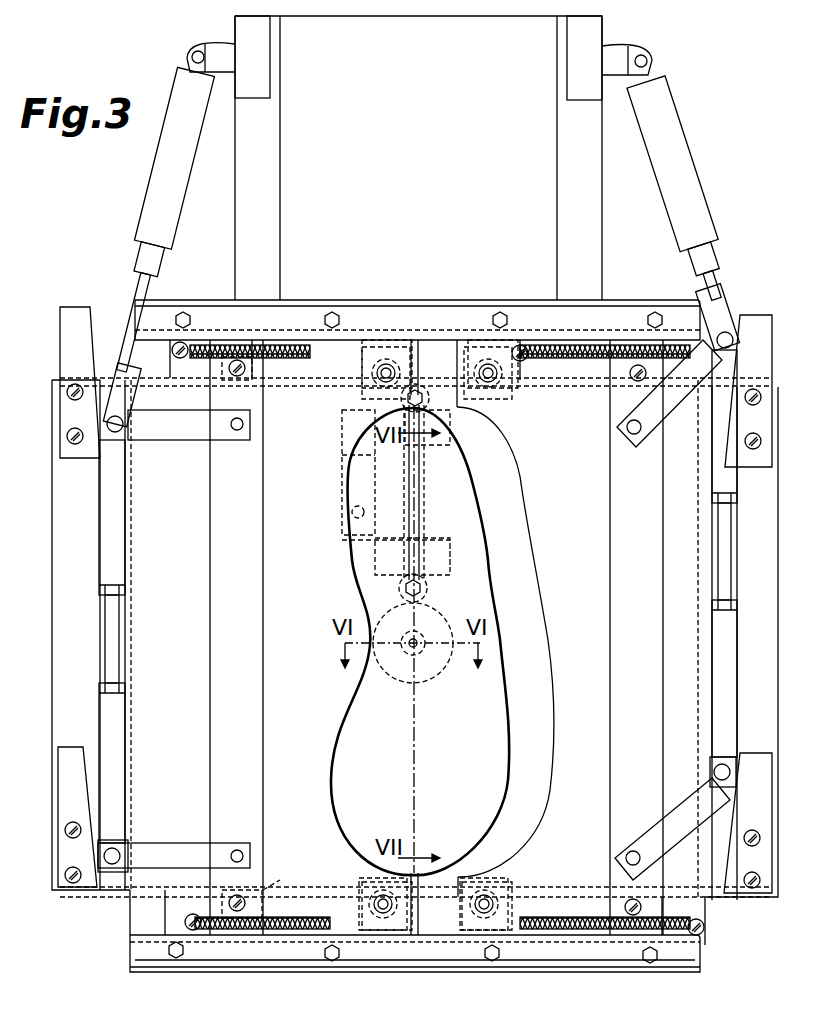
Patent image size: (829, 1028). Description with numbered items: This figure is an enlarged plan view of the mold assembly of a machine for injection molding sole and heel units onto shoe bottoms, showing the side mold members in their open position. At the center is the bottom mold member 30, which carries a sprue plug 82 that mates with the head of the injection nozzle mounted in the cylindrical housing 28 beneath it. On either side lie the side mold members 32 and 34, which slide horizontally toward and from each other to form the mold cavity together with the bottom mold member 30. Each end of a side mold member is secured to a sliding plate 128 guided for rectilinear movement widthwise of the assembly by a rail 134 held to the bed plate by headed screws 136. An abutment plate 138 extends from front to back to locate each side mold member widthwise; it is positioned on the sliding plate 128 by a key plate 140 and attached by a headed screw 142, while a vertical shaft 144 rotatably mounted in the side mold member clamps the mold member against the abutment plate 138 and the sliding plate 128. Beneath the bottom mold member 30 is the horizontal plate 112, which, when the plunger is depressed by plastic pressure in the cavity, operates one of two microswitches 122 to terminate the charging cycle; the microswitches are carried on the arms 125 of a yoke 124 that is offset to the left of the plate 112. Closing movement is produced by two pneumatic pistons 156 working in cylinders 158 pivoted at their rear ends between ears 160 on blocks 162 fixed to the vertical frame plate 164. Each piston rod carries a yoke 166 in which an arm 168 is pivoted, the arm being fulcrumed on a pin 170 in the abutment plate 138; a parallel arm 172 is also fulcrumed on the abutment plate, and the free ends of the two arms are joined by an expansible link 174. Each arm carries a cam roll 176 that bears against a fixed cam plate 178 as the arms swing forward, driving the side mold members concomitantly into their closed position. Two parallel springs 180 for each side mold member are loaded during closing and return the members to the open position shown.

The cylindrical housing 28 is at (423, 685).
The bottom mold member 30 is at (478, 817).
The side mold member 32 is at (270, 518).
The side mold member 34 is at (600, 555).
The sprue plug 82 is at (420, 655).
The horizontal plate 112 is at (422, 505).
The microswitch 122 is at (398, 402).
The yoke 124 is at (342, 495).
The arm 125 is at (470, 437).
The sliding plate 128 is at (360, 338).
The rail 134 is at (610, 962).
The headed screw 136 is at (170, 955).
The abutment plate 138 is at (212, 688).
The key plate 140 is at (268, 895).
The headed screw 142 is at (240, 900).
The vertical shaft 144 is at (376, 895).
The pneumatic piston 156 is at (124, 345).
The cylinder 158 is at (152, 180).
The ear 160 is at (222, 68).
The block 162 is at (262, 67).
The vertical frame plate 164 is at (280, 150).
The yoke 166 is at (125, 400).
The arm 168 is at (200, 440).
The pin 170 is at (244, 424).
The arm 172 is at (165, 843).
The expansible link 174 is at (115, 630).
The cam roll 176 is at (108, 440).
The cam plate 178 is at (64, 352).
The spring 180 is at (196, 345).